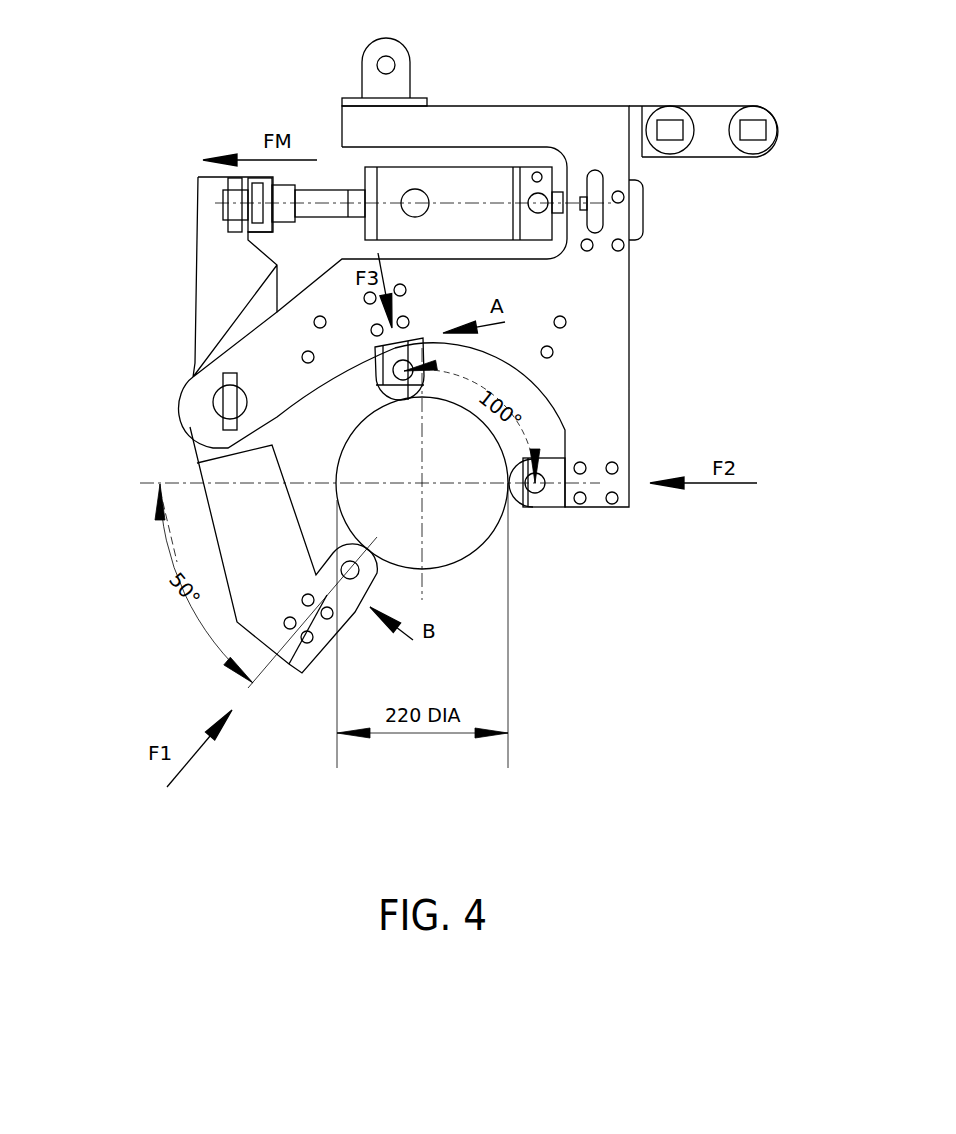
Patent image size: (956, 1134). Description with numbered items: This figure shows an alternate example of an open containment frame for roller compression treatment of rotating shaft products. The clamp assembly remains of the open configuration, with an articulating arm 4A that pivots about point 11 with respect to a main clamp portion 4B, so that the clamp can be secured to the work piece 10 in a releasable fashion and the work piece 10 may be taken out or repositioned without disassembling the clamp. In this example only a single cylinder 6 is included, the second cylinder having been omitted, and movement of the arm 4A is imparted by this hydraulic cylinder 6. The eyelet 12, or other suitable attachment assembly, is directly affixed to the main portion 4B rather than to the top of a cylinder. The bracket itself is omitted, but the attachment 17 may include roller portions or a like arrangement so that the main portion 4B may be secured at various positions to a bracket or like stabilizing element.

The articulating arm 4A is at (233, 548).
The main clamp portion 4B is at (614, 363).
The hydraulic cylinder 6 is at (445, 182).
The work piece 10 is at (477, 533).
The pivot point 11 is at (217, 390).
The eyelet 12 is at (370, 53).
The attachment 17 is at (677, 125).